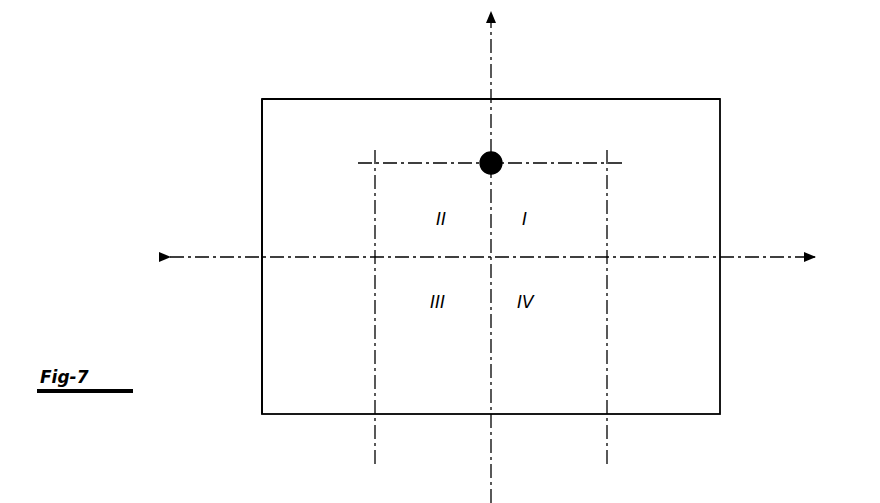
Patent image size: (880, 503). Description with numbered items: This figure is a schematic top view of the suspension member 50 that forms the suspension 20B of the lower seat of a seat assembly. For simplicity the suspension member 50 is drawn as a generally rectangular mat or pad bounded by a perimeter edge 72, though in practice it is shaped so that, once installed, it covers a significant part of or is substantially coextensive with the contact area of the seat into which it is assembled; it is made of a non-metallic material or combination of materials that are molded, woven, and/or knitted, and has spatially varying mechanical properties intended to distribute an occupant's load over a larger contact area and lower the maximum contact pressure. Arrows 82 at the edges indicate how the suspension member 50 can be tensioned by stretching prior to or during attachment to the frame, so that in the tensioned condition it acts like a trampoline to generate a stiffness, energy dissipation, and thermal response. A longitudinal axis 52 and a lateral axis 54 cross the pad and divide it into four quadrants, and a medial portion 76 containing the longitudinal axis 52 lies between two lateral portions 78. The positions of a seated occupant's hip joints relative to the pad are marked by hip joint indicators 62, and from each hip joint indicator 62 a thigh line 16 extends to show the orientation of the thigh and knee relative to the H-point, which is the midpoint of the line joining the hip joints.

The thigh line 16 is at (375, 357).
The suspension 20B is at (782, 198).
The suspension member 50 is at (720, 318).
The longitudinal axis 52 is at (491, 77).
The lateral axis 54 is at (745, 257).
The hip joint indicator 62 is at (375, 163).
The perimeter edge 72 is at (357, 99).
The medial portion 76 is at (500, 424).
The lateral portions 78 is at (316, 421).
The arrows 82 is at (491, 30).